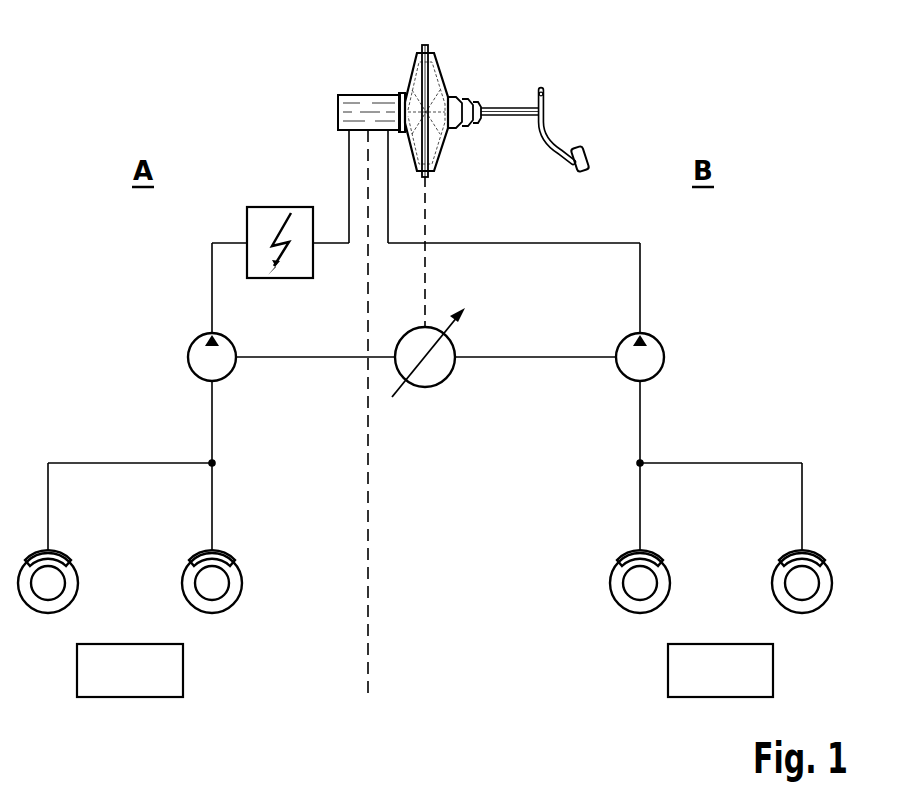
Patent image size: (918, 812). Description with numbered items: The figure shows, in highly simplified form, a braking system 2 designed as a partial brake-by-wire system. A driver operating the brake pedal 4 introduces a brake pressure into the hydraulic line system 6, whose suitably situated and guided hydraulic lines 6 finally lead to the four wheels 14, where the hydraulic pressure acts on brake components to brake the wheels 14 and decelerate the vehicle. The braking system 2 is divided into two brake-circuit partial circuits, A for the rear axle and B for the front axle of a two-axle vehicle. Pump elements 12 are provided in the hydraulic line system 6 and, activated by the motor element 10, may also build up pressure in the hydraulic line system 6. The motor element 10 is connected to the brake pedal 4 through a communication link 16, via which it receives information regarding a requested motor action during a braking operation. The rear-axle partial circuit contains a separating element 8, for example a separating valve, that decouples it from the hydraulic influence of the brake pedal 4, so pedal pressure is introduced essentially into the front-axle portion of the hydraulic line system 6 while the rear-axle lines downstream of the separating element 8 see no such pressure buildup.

The braking system 2 is at (112, 66).
The brake pedal 4 is at (548, 132).
The hydraulic line system 6 is at (387, 157).
The separating element 8 is at (262, 207).
The motor element 10 is at (425, 387).
The pump elements 12 is at (188, 357).
The wheels 14 is at (182, 583).
The communication link 16 is at (428, 219).